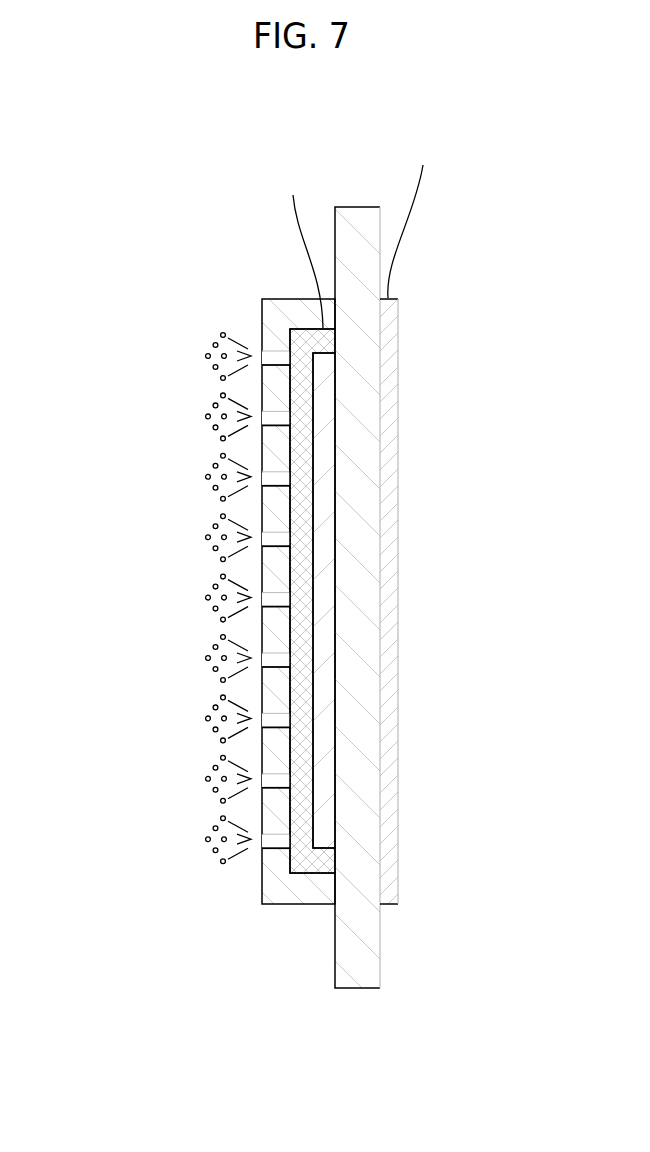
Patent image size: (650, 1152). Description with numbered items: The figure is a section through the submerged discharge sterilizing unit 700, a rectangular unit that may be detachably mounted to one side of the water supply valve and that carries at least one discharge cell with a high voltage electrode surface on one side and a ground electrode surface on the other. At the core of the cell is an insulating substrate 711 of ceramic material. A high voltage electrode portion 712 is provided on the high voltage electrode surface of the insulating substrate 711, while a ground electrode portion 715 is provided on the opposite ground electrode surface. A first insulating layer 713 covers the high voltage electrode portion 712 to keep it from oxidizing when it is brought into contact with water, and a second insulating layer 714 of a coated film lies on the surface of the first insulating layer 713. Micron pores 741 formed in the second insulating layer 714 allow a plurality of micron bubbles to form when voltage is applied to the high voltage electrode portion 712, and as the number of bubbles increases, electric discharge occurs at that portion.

The submerged discharge sterilizing unit 700 is at (193, 395).
The insulating substrate 711 is at (367, 642).
The high voltage electrode portion 712 is at (328, 760).
The first insulating layer 713 is at (307, 692).
The second insulating layer 714 is at (272, 329).
The ground electrode portion 715 is at (392, 413).
The micron pores 741 is at (272, 537).